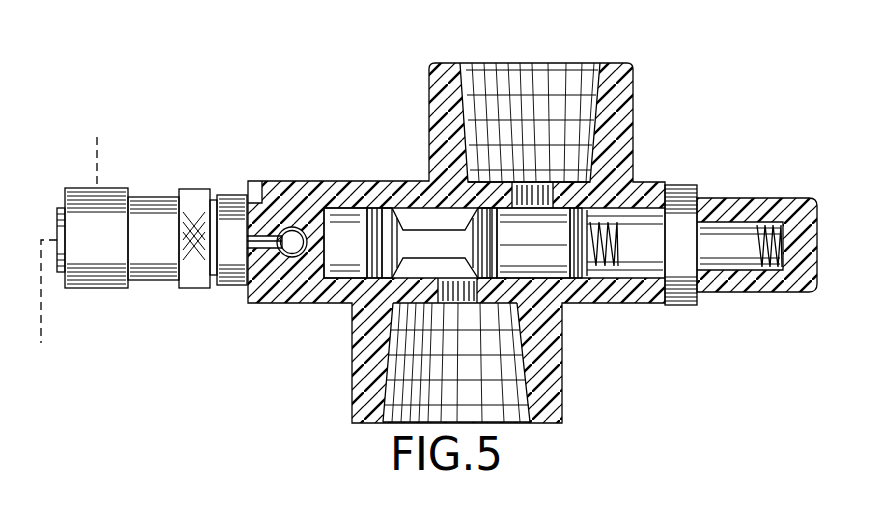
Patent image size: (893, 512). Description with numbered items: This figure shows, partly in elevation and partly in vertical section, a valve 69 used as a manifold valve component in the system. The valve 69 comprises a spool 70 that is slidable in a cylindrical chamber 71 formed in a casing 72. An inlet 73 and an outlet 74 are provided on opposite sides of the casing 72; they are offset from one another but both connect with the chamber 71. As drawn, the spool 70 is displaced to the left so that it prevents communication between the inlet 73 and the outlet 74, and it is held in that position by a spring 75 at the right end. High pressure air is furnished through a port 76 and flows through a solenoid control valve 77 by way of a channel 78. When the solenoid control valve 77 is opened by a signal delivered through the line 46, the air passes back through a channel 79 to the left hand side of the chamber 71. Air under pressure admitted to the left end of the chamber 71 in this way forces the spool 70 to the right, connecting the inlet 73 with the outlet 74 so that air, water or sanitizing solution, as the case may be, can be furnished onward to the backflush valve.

The line 46 is at (41, 336).
The valve 69 is at (743, 108).
The spool 70 is at (427, 240).
The cylindrical chamber 71 is at (638, 278).
The casing 72 is at (625, 136).
The inlet 73 is at (592, 80).
The outlet 74 is at (523, 422).
The spring 75 is at (757, 224).
The port 76 is at (295, 238).
The solenoid control valve 77 is at (153, 197).
The channel 78 is at (243, 279).
The channel 79 is at (252, 198).